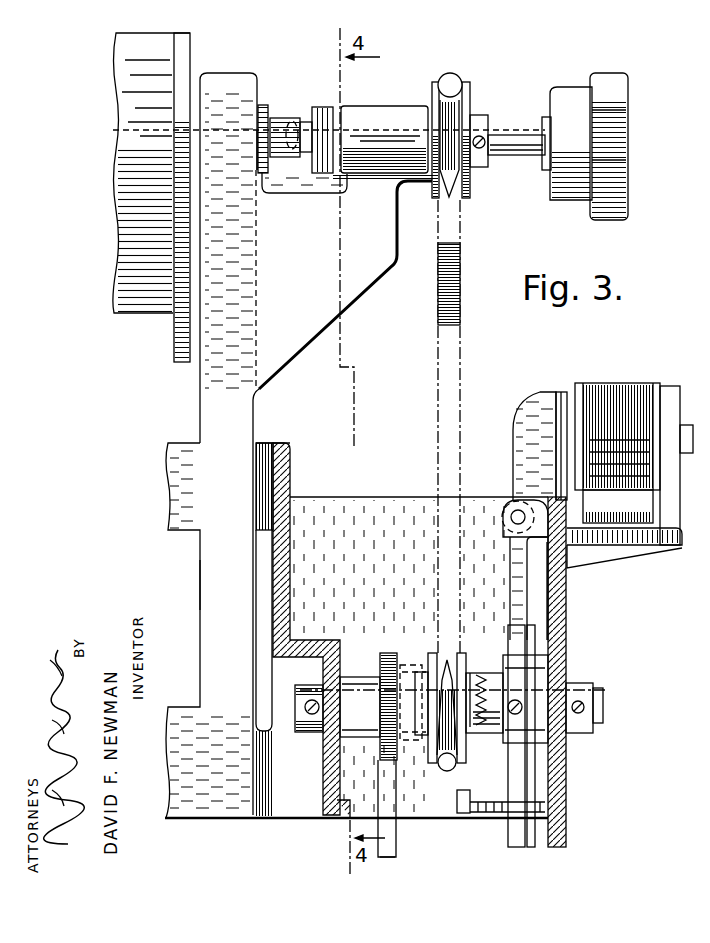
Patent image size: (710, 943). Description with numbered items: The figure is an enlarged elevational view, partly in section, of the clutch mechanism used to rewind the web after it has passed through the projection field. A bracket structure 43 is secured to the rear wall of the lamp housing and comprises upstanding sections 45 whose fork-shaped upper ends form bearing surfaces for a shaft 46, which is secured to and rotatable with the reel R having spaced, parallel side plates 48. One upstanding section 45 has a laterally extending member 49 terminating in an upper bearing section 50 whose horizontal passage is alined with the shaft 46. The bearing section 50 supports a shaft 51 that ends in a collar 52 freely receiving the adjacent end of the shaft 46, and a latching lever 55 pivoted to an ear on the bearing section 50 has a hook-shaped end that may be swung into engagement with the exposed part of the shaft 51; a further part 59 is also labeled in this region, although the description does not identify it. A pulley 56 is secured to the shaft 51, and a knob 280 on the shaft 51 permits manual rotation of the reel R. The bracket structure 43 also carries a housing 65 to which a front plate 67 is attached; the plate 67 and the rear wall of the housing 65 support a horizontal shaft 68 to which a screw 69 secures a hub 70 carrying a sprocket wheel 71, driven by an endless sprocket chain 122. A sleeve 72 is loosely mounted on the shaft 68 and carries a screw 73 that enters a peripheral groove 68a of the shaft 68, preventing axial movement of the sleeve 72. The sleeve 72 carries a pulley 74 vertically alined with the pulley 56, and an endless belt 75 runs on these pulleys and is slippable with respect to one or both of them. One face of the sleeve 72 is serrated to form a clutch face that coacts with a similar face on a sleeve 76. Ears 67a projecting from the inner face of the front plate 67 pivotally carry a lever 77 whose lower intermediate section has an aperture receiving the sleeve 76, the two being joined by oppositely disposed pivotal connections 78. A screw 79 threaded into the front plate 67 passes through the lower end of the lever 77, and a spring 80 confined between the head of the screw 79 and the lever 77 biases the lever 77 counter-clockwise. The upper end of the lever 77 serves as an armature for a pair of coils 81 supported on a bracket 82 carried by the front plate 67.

The reel R is at (199, 46).
The bracket structure 43 is at (192, 584).
The upstanding section 45 is at (215, 365).
The shaft 46 is at (140, 120).
The side plate 48 is at (186, 66).
The laterally extending member 49 is at (386, 262).
The bearing section 50 is at (364, 114).
The shaft 51 is at (398, 128).
The collar 52 is at (302, 118).
The latching lever 55 is at (320, 106).
The pulley 56 is at (474, 100).
The nut 59 is at (279, 120).
The housing 65 is at (357, 505).
The front plate 67 is at (566, 792).
The ears 67a is at (503, 508).
The horizontal shaft 68 is at (600, 702).
The groove 68a is at (408, 660).
The screw 69 is at (358, 675).
The hub 70 is at (362, 705).
The sprocket wheel 71 is at (386, 655).
The sleeve 72 is at (472, 662).
The screw 73 is at (417, 668).
The pulley 74 is at (425, 800).
The endless belt 75 is at (462, 247).
The sleeve 76 is at (532, 684).
The lever 77 is at (516, 420).
The pivotal connections 78 is at (535, 737).
The screw 79 is at (533, 838).
The spring 80 is at (476, 815).
The coils 81 is at (625, 385).
The bracket 82 is at (660, 546).
The endless sprocket chain 122 is at (392, 848).
The knob 280 is at (620, 138).